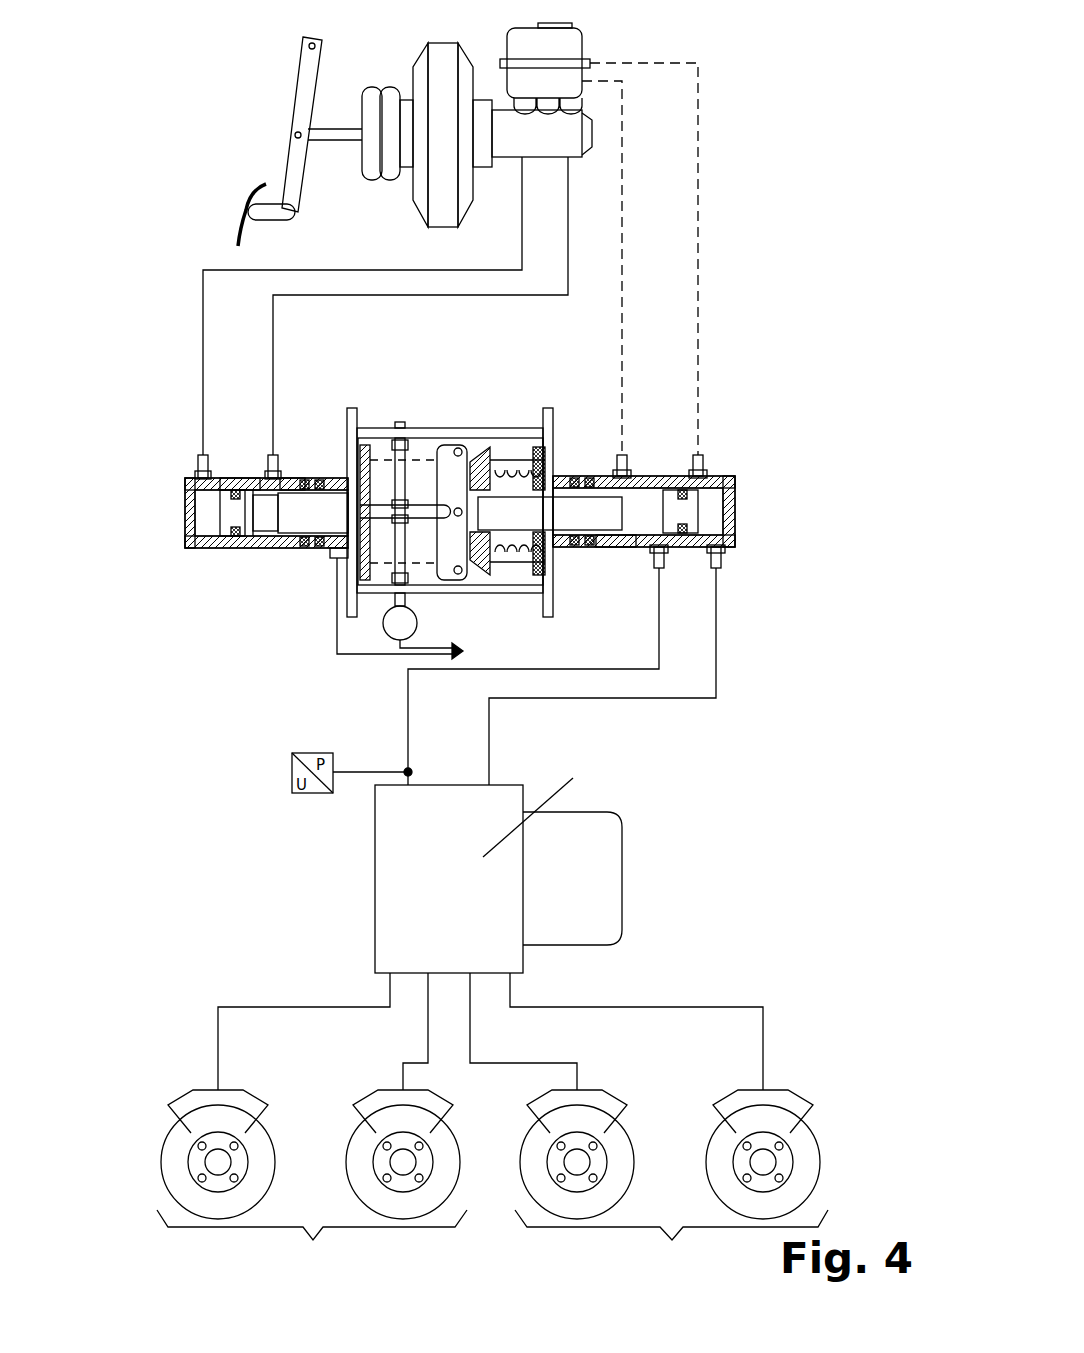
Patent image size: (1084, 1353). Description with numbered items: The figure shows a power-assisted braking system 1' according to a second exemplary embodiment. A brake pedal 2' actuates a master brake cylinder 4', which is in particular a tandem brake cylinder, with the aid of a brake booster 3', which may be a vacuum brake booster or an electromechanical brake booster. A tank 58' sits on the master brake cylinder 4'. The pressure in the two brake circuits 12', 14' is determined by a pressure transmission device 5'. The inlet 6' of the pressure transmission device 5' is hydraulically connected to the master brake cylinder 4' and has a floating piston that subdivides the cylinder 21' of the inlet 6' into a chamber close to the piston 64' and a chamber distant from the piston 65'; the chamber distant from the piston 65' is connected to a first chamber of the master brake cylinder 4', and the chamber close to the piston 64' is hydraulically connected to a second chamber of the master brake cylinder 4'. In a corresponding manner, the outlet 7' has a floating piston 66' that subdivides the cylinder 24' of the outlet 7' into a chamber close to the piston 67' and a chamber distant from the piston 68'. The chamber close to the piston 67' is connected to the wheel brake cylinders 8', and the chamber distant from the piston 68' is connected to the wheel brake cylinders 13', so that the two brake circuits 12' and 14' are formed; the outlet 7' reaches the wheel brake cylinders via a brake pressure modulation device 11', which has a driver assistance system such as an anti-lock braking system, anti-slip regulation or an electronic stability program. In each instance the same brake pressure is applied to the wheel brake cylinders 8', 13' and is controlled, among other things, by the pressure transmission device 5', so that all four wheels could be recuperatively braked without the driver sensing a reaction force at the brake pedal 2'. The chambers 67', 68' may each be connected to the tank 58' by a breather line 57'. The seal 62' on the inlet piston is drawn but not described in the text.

The power-assisted braking system 1' is at (140, 59).
The brake pedal 2' is at (277, 141).
The brake booster 3' is at (427, 118).
The master brake cylinder 4' is at (556, 151).
The tank 58' is at (584, 60).
The breather line 57' is at (675, 259).
The pressure transmission device 5' is at (403, 540).
The inlet 6' is at (240, 452).
The cylinder 21' is at (302, 452).
The chamber distant from the piston 65' is at (195, 513).
The seal 62' is at (214, 543).
The chamber close to the piston 64' is at (278, 546).
The floating piston 66' is at (685, 481).
The chamber close to the piston 67' is at (643, 456).
The outlet 7' is at (714, 447).
The chamber distant from the piston 68' is at (683, 522).
The cylinder 24' is at (620, 570).
The brake pressure modulation device 11' is at (594, 860).
The wheel brake cylinders 8' is at (310, 1135).
The wheel brake cylinders 13' is at (670, 1135).
The brake circuit 12' is at (312, 1242).
The brake circuit 14' is at (671, 1242).